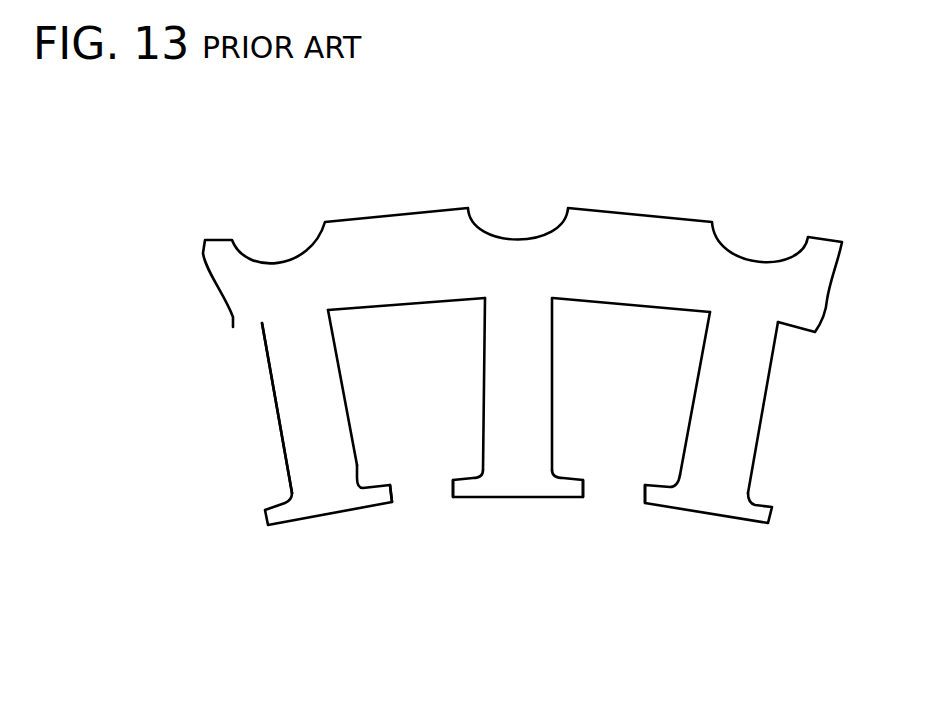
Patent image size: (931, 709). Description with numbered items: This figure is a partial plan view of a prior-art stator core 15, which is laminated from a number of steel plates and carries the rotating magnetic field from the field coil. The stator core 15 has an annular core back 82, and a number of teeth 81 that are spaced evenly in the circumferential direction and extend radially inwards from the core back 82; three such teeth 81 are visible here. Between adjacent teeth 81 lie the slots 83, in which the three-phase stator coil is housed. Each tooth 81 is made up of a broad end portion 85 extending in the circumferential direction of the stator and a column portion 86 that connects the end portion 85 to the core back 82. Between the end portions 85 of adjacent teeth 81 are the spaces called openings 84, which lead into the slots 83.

The stator core 15 is at (516, 368).
The teeth 81 is at (543, 410).
The core back 82 is at (373, 240).
The slots 83 is at (410, 413).
The openings 84 is at (420, 490).
The end portions 85 is at (538, 485).
The column portions 86 is at (283, 400).